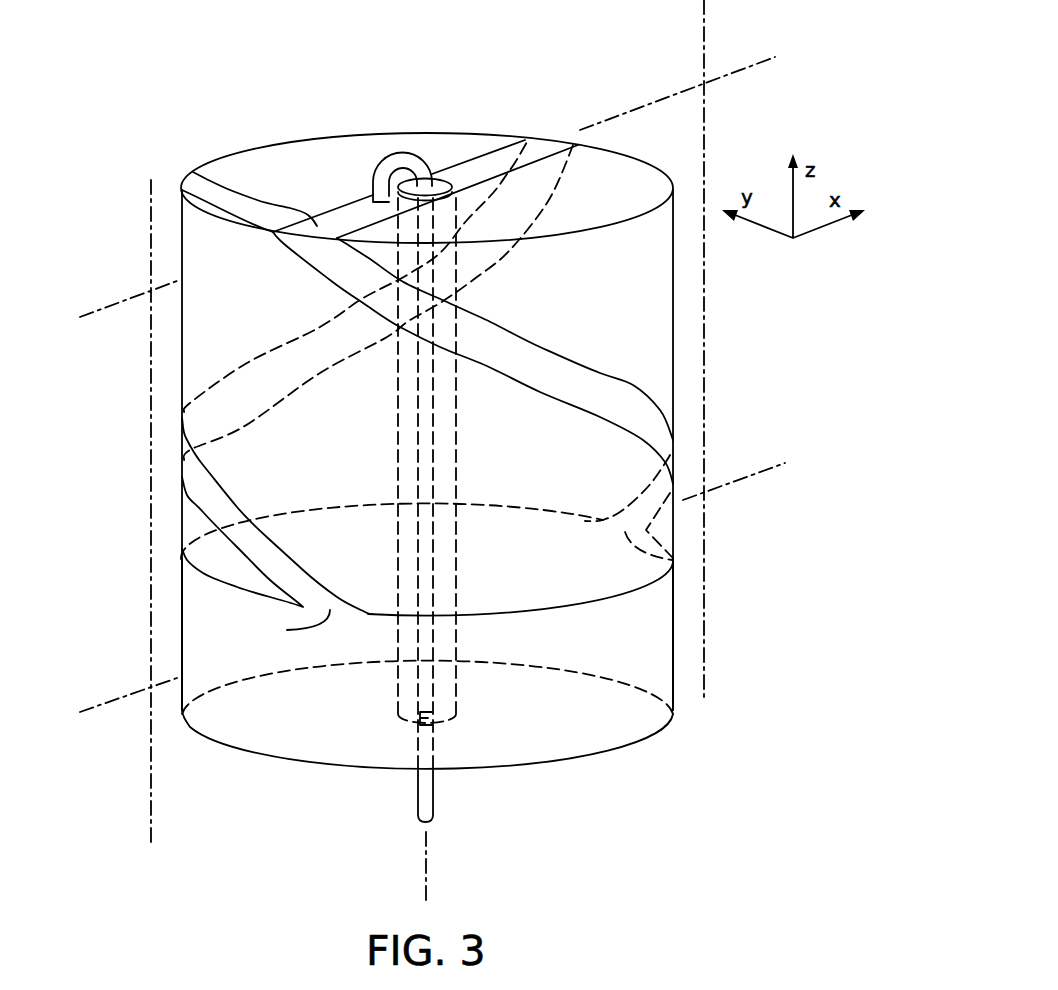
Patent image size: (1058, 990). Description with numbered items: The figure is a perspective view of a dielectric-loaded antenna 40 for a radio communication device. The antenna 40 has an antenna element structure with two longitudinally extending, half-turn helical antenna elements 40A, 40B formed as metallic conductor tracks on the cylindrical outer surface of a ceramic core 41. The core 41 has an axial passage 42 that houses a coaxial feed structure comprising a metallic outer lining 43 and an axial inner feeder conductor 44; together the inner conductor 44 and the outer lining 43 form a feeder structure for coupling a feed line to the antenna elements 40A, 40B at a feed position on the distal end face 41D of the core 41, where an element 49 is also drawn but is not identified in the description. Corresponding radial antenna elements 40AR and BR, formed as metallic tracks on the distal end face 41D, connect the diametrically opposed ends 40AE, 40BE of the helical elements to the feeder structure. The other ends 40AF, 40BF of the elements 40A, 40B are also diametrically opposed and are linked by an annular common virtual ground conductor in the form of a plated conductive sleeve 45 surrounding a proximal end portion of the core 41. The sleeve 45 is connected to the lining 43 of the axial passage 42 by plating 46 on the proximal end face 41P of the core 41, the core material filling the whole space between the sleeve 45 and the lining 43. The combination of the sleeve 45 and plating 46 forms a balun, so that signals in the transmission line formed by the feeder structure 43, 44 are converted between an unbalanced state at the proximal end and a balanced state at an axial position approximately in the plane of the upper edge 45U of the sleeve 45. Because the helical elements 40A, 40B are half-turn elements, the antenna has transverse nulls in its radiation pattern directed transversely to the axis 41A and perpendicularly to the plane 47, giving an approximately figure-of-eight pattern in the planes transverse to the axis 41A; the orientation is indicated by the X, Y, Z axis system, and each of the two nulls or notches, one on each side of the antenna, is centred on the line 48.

The antenna 40 is at (122, 112).
The helical antenna element 40A is at (633, 390).
The radial antenna element 40AR is at (193, 172).
The end of helical antenna element 40AE is at (275, 233).
The other end of helical antenna element 40AF is at (675, 560).
The helical antenna element 40B is at (247, 366).
The end of helical antenna element 40BE is at (580, 142).
The other end of helical antenna element 40BF is at (287, 630).
The radial antenna element BR is at (538, 147).
The ceramic core 41 is at (247, 148).
The distal end face of the core 41D is at (290, 167).
The axis 41A is at (425, 882).
The proximal end face of the core 41P is at (492, 826).
The axial passage 42 is at (437, 146).
The metallic outer lining 43 is at (456, 400).
The axial inner feeder conductor 44 is at (398, 152).
The conductive sleeve 45 is at (633, 659).
The upper edge of the sleeve 45U is at (608, 598).
The plating 46 is at (552, 743).
The plane 47 is at (704, 15).
The line 48 is at (863, 560).
The disk 49 is at (450, 181).